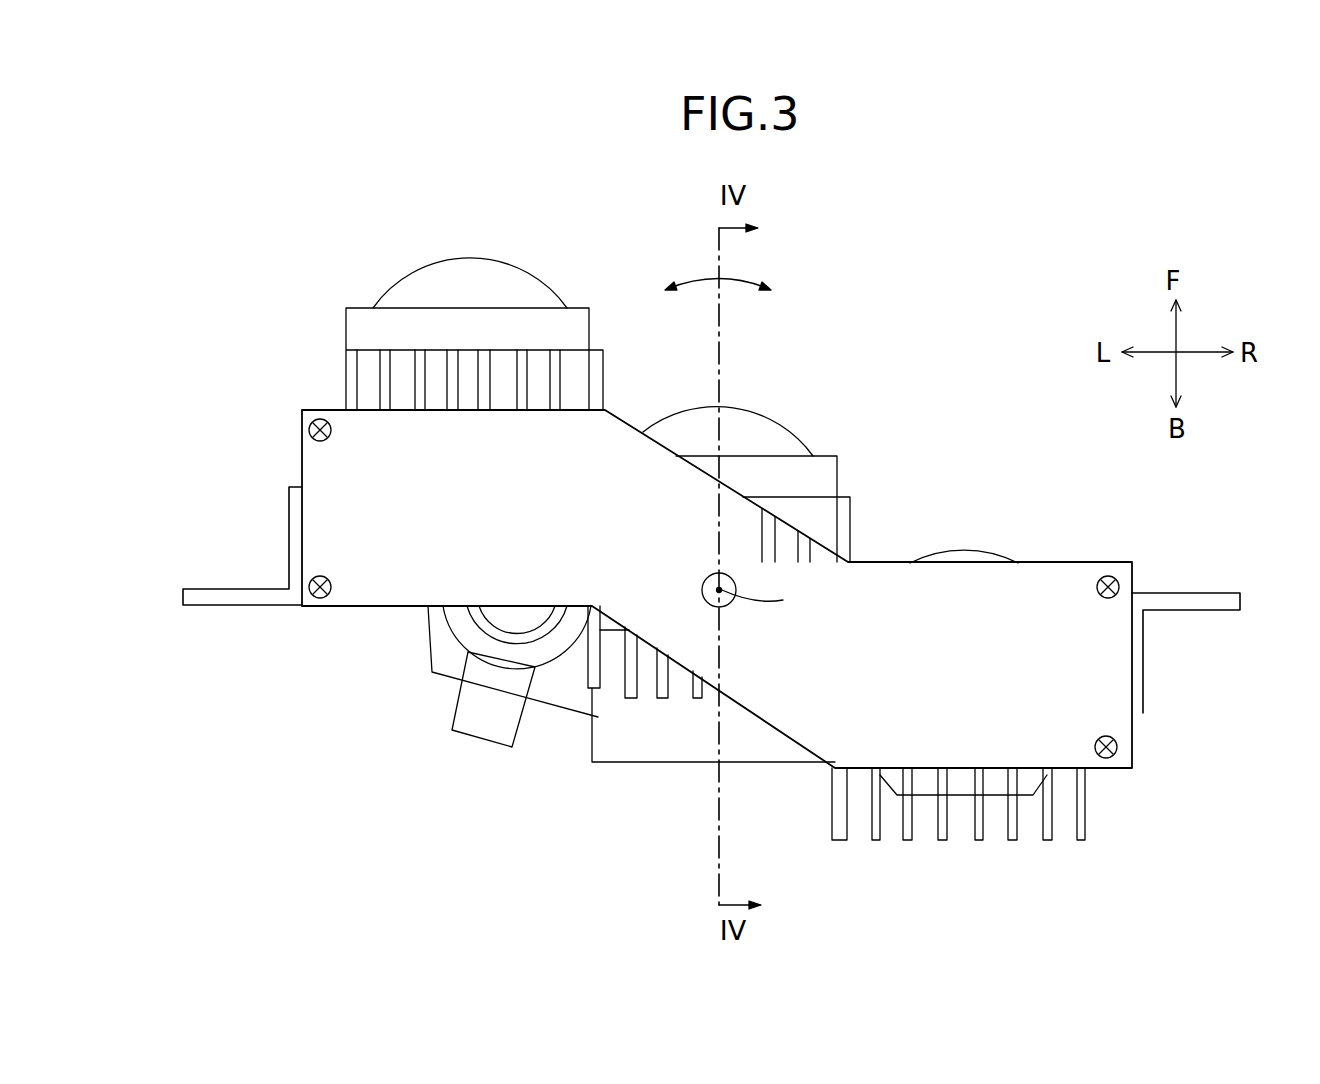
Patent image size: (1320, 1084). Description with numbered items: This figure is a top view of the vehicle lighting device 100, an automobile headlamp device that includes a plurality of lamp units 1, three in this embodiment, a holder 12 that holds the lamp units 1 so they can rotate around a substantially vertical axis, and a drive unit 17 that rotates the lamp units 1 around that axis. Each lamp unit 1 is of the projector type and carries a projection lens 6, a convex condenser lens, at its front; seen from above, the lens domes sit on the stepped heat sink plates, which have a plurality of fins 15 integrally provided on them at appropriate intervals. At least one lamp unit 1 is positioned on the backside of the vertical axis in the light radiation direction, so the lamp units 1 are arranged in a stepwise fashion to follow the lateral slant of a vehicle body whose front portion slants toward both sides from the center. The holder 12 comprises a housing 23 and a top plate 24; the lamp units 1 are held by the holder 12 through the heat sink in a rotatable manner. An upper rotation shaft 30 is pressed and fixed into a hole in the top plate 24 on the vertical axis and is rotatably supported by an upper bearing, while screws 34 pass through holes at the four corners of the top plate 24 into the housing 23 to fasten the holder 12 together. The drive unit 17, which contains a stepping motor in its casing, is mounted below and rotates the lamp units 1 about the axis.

The vehicle lighting device 100 is at (1021, 336).
The lamp unit 1 is at (330, 298).
The projection lens 6 is at (523, 268).
The fins 15 is at (345, 393).
The holder 12 is at (190, 393).
The top plate 24 is at (302, 452).
The housing 23 is at (288, 503).
The screws 34 is at (326, 600).
The drive unit 17 is at (432, 672).
The upper rotation shaft 30 is at (703, 582).